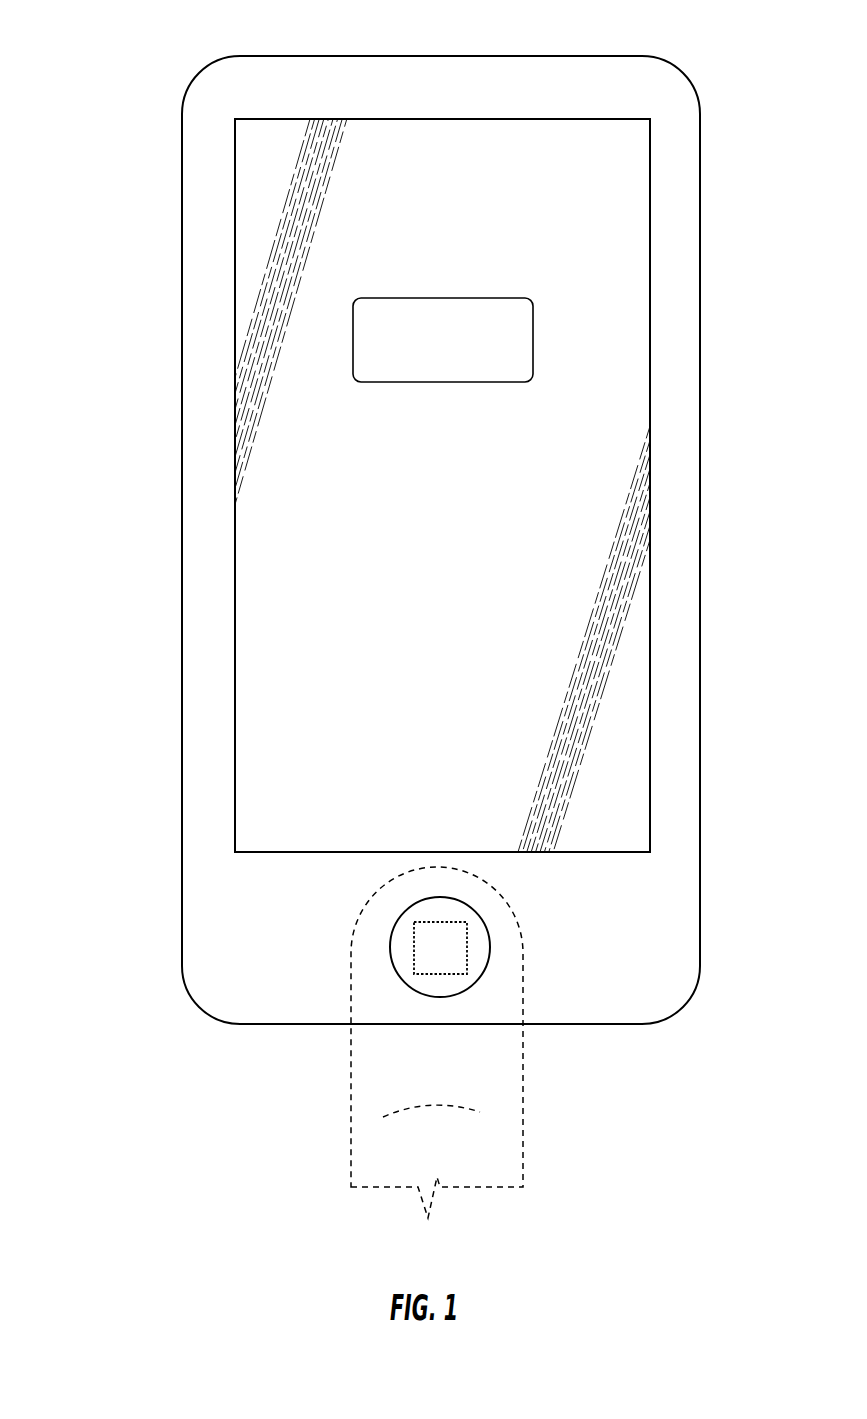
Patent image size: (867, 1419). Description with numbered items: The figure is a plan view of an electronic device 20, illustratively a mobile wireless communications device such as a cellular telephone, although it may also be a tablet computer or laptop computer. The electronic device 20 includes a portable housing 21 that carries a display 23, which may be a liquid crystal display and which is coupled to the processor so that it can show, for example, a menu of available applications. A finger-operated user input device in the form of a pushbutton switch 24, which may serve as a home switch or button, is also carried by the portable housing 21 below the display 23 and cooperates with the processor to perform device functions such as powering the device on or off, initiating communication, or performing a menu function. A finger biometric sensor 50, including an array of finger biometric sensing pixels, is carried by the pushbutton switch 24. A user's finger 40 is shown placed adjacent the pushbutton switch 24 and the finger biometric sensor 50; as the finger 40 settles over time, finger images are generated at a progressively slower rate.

The electronic device 20 is at (176, 53).
The portable housing 21 is at (182, 243).
The display 23 is at (236, 387).
The pushbutton switch 24 is at (490, 948).
The user's finger 40 is at (351, 1040).
The finger biometric sensor 50 is at (435, 976).